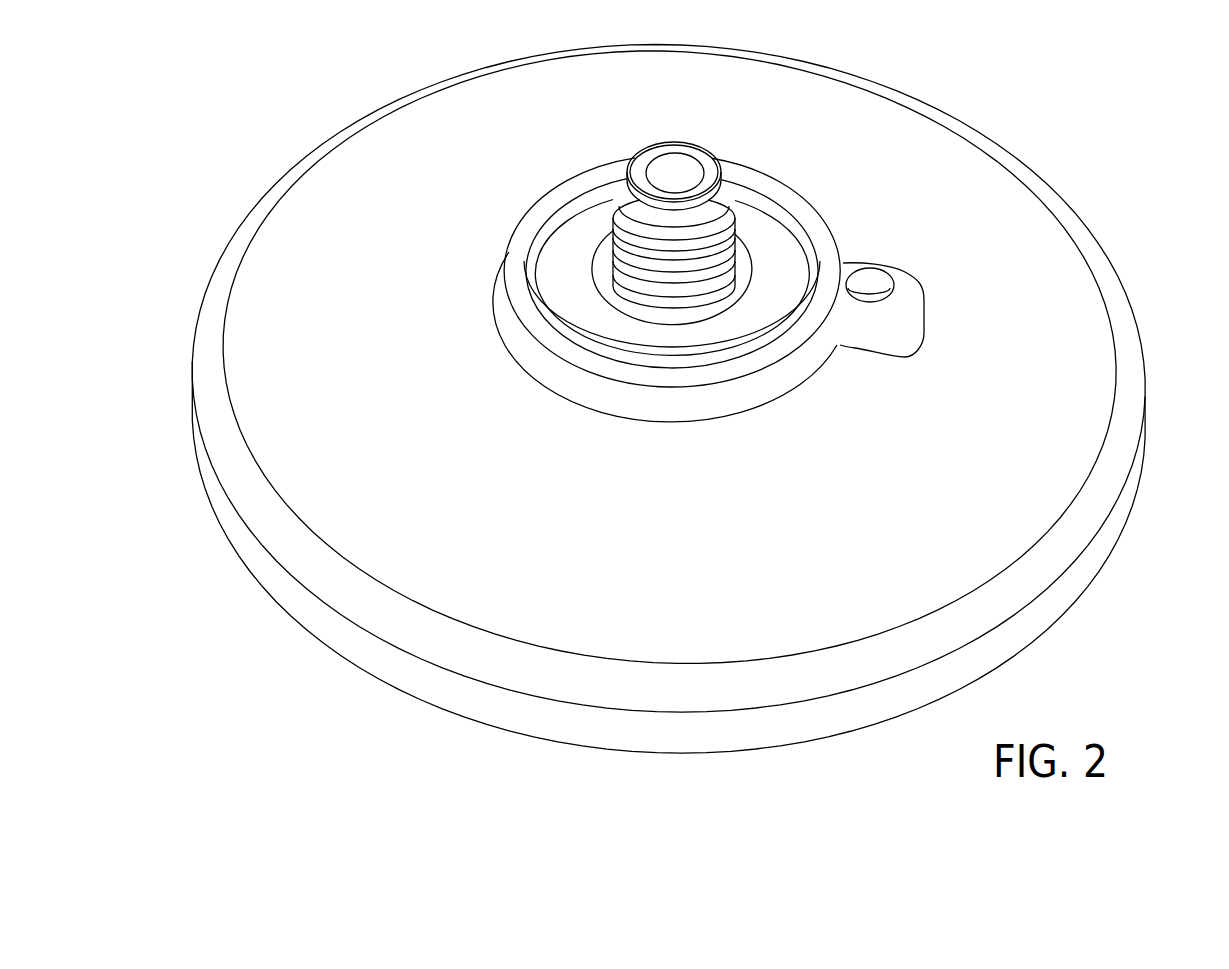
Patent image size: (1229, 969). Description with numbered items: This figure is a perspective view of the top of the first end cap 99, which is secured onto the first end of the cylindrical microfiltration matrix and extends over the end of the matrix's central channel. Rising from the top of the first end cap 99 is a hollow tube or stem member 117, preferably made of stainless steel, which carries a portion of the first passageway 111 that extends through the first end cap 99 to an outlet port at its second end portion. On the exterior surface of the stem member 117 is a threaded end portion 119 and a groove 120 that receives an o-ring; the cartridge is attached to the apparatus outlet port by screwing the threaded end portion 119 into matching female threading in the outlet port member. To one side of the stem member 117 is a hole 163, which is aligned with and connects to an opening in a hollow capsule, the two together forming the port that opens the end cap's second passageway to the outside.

The first end cap 99 is at (276, 134).
The threaded end portion 119 is at (612, 230).
The groove 120 is at (698, 218).
The stem member 117 is at (717, 162).
The first passageway 111 is at (684, 173).
The hole 163 is at (873, 280).